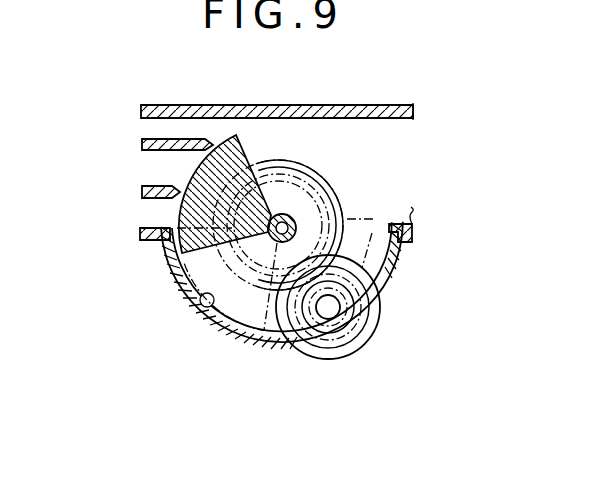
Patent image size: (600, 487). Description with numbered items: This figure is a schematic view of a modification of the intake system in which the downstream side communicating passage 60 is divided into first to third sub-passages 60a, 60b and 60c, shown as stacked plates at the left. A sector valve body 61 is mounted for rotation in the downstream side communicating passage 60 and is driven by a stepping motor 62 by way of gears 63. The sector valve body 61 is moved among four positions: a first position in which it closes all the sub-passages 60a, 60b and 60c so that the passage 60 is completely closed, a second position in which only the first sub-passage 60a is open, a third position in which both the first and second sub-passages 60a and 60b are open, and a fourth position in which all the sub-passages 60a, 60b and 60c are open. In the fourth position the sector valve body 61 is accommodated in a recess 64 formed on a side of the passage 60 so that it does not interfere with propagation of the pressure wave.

The downstream side communicating passage 60 is at (239, 137).
The first sub-passage 60a is at (162, 128).
The second sub-passage 60b is at (164, 163).
The third sub-passage 60c is at (158, 210).
The sector valve body 61 is at (247, 132).
The stepping motor 62 is at (373, 337).
The gears 63 is at (372, 233).
The recess 64 is at (204, 307).